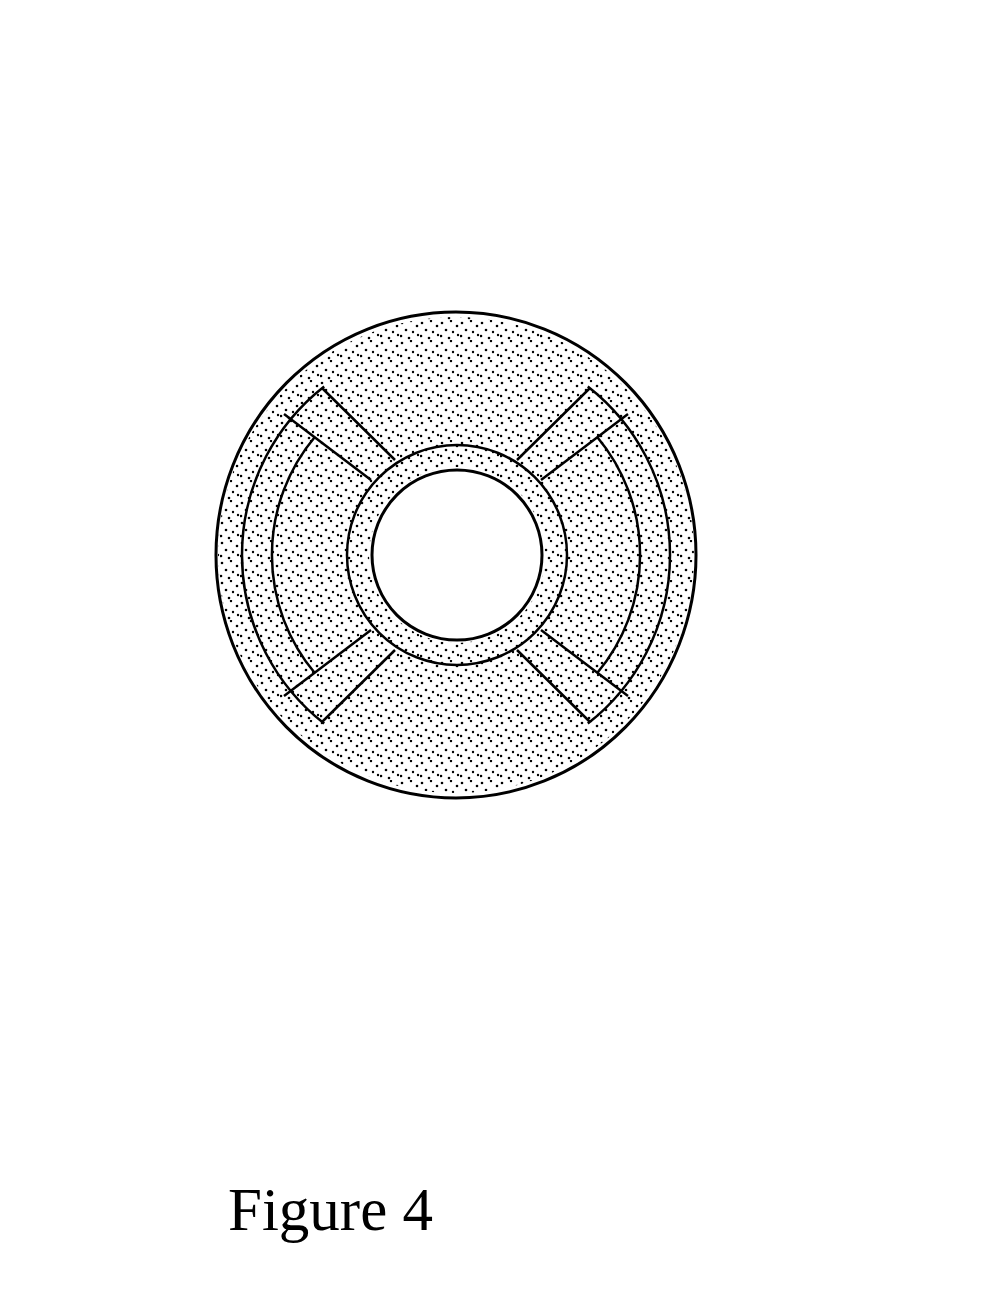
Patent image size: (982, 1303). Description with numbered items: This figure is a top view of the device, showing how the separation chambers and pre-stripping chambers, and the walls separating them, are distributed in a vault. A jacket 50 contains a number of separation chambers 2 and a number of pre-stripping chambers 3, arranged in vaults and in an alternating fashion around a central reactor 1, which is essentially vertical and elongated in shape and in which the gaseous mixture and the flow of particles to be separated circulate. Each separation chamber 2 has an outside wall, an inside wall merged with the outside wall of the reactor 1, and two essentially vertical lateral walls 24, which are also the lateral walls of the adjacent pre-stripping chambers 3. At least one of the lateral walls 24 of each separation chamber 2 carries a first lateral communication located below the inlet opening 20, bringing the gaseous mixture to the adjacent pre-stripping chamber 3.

The central reactor 1 is at (457, 555).
The separation chamber 2 is at (297, 580).
The pre-stripping chamber 3 is at (453, 742).
The inlet opening 20 is at (347, 565).
The lateral walls 24 is at (343, 638).
The jacket 50 is at (451, 296).